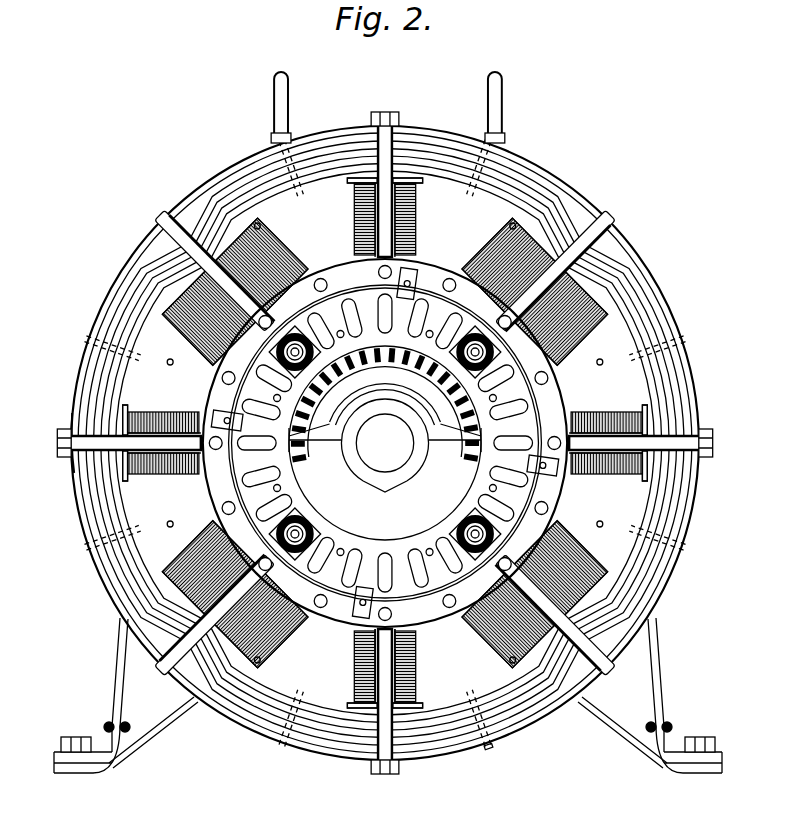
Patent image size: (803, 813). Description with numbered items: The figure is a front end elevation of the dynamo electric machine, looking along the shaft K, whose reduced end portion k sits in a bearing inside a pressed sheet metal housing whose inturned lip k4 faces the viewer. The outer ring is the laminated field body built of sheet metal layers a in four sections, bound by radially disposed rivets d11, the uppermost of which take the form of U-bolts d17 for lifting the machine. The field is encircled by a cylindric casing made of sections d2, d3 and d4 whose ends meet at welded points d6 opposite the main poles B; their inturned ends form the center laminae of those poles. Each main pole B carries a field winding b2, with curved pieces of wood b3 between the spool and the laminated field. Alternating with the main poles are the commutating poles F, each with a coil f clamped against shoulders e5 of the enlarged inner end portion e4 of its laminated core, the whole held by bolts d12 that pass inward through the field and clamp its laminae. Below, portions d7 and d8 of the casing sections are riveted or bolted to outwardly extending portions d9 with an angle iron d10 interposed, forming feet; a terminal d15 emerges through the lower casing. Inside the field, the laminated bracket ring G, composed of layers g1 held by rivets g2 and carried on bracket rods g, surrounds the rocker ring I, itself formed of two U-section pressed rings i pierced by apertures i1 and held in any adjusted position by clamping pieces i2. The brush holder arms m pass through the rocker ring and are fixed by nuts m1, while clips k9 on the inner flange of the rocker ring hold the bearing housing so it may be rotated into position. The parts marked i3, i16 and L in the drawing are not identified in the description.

The casing section d2 is at (410, 140).
The casing section d3 is at (712, 372).
The terminal d15 is at (74, 505).
The sheet metal layer a is at (515, 172).
The rivet d11 is at (94, 330).
The casing section d4 is at (478, 752).
The main pole B is at (195, 332).
The field winding b2 is at (275, 248).
The piece of wood b3 is at (260, 226).
The joining point d6 is at (186, 220).
The commutating pole F is at (411, 218).
The coil f is at (358, 220).
The bracket rod g is at (358, 246).
The ring layer g1 is at (400, 672).
The shoulder e5 is at (350, 182).
The enlarged inner end portion e4 is at (416, 183).
The bolt d12 is at (386, 118).
The U-bolt d17 is at (286, 128).
The bracket ring G is at (222, 470).
The rivet g2 is at (327, 286).
The nut m1 is at (268, 316).
The clamping piece i2 is at (412, 272).
The rocker ring I is at (456, 572).
The slot i3 is at (354, 410).
The slot i16 is at (504, 451).
The aperture i1 is at (387, 553).
The pressed sheet metal ring i is at (497, 400).
The brush holder arm m is at (274, 348).
The commutator ring L is at (385, 470).
The reduced end portion k is at (370, 470).
The inturned lip k4 is at (343, 460).
The clip k9 is at (433, 452).
The shaft K is at (384, 443).
The foot portion d7 is at (117, 698).
The foot portion d8 is at (657, 662).
The outwardly extending portion d9 is at (148, 740).
The angle iron d10 is at (100, 774).